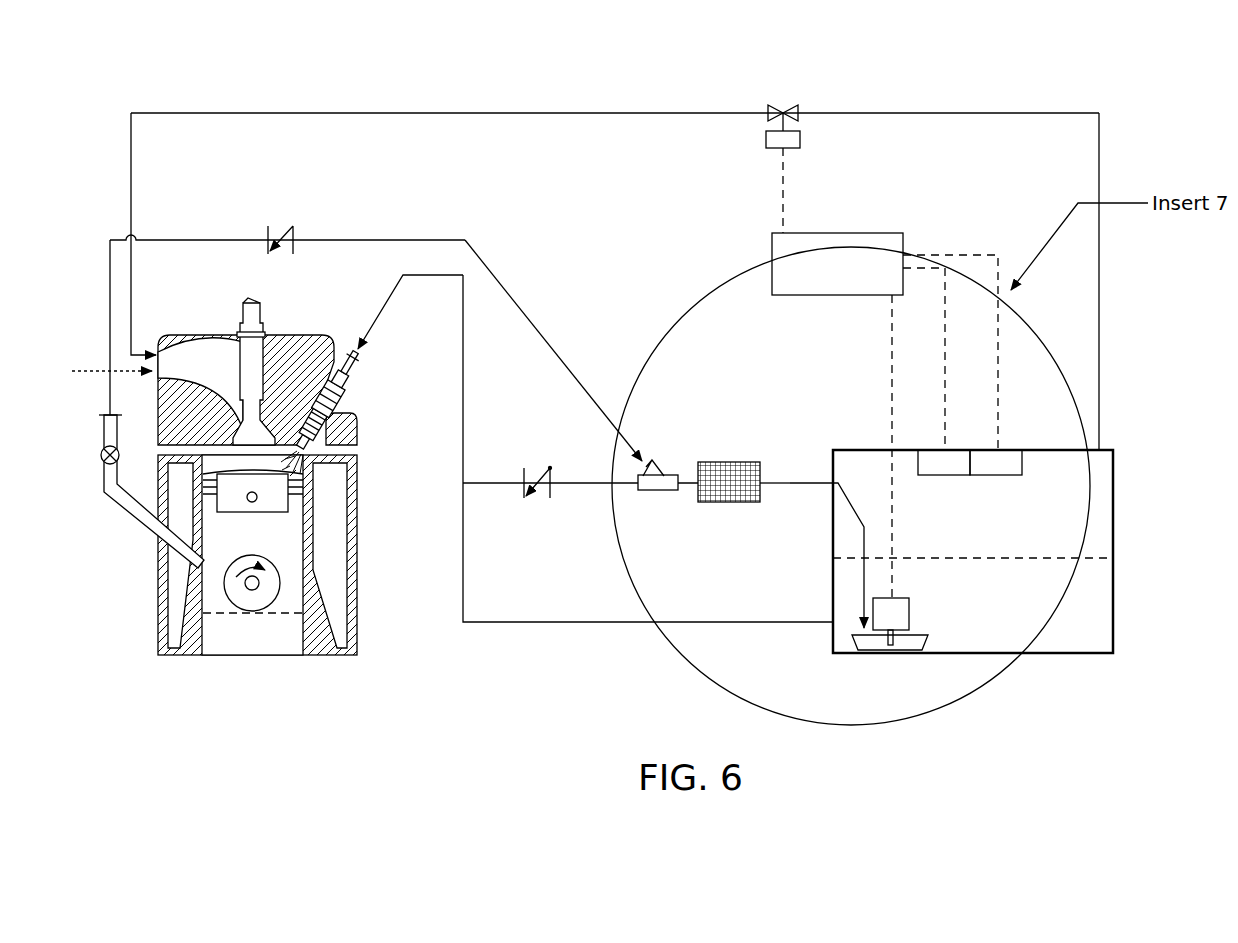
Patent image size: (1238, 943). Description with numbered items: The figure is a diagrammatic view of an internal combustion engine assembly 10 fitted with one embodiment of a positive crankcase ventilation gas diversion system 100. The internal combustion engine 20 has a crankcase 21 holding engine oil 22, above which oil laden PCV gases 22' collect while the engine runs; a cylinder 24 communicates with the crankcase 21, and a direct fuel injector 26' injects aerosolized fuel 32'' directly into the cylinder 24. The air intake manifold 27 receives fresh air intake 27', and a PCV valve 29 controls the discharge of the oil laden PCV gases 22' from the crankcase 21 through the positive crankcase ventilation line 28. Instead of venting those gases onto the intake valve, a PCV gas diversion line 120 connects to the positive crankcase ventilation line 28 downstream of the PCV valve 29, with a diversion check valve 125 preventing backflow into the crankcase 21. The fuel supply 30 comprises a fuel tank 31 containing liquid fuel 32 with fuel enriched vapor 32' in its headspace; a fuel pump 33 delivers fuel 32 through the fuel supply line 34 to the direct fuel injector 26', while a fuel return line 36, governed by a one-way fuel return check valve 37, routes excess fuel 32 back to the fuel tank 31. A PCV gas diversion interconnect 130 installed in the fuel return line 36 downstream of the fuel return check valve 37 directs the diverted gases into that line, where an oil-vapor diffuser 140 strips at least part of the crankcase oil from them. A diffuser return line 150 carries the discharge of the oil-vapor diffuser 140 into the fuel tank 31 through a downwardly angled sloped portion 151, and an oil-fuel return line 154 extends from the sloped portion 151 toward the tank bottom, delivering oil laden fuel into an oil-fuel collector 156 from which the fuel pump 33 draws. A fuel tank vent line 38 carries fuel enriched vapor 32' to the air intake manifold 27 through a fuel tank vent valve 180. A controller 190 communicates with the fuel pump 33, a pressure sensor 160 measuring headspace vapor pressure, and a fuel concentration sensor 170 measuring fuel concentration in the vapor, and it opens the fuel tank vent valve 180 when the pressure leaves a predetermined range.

The internal combustion engine assembly 10 is at (1076, 92).
The internal combustion engine 20 is at (305, 554).
The crankcase 21 is at (358, 633).
The engine oil 22 is at (253, 600).
The oil laden PCV gases 22' is at (253, 510).
The cylinder 24 is at (298, 508).
The direct fuel injector 26' is at (373, 399).
The air intake manifold 27 is at (257, 390).
The fresh air intake 27' is at (97, 371).
The positive crankcase ventilation line 28 is at (140, 514).
The PCV valve 29 is at (103, 457).
The fuel supply 30 is at (1006, 674).
The fuel tank 31 is at (1114, 612).
The fuel 32 is at (973, 594).
The fuel enriched vapor 32' is at (1006, 533).
The aerosolized fuel 32'' is at (360, 478).
The fuel pump 33 is at (909, 622).
The fuel supply line 34 is at (527, 625).
The fuel return line 36 is at (483, 484).
The fuel return check valve 37 is at (551, 491).
The fuel tank vent line 38 is at (1100, 250).
The positive crankcase ventilation gas diversion system 100 is at (549, 302).
The PCV gas diversion line 120 is at (220, 240).
The diversion check valve 125 is at (296, 233).
The PCV gas diversion interconnect 130 is at (667, 475).
The oil-vapor diffuser 140 is at (726, 461).
The diffuser return line 150 is at (808, 483).
The sloped portion 151 is at (863, 480).
The oil-fuel return line 154 is at (857, 602).
The oil-fuel collector 156 is at (925, 637).
The pressure sensor 160 is at (1016, 468).
The fuel concentration sensor 170 is at (933, 477).
The fuel tank vent valve 180 is at (765, 141).
The controller 190 is at (885, 373).